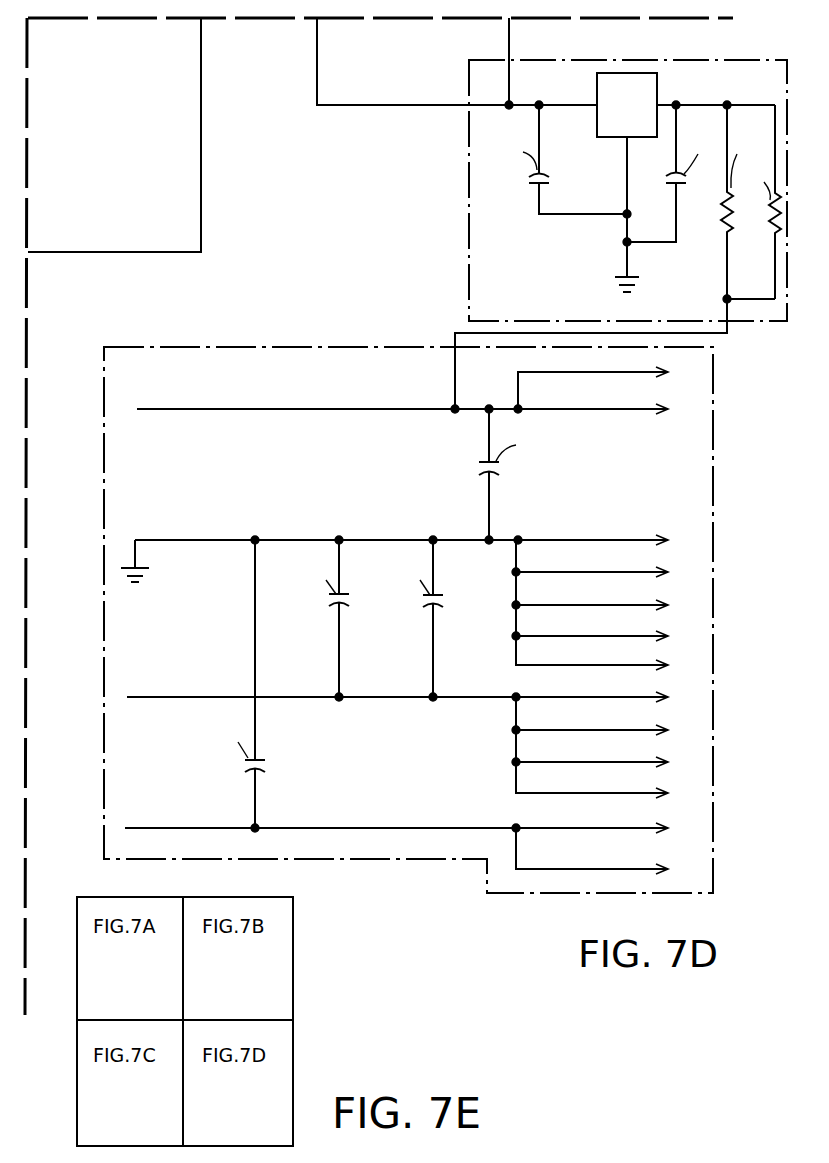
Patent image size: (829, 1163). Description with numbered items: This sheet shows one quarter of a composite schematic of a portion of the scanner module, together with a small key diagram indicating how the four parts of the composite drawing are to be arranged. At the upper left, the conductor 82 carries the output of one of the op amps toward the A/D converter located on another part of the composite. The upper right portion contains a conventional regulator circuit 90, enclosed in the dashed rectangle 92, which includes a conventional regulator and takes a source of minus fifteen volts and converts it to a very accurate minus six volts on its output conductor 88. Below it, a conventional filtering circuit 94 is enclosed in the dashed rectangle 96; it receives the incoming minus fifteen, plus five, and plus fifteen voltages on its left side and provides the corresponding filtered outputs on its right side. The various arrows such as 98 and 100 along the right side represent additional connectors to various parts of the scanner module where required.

The conductor 82 is at (201, 153).
The conductor 88 is at (346, 107).
The regulator circuit 90 is at (465, 157).
The dashed rectangle 92 is at (468, 208).
The filtering circuit 94 is at (434, 583).
The dashed rectangle 96 is at (235, 347).
The arrow 98 is at (640, 728).
The arrow 100 is at (625, 866).